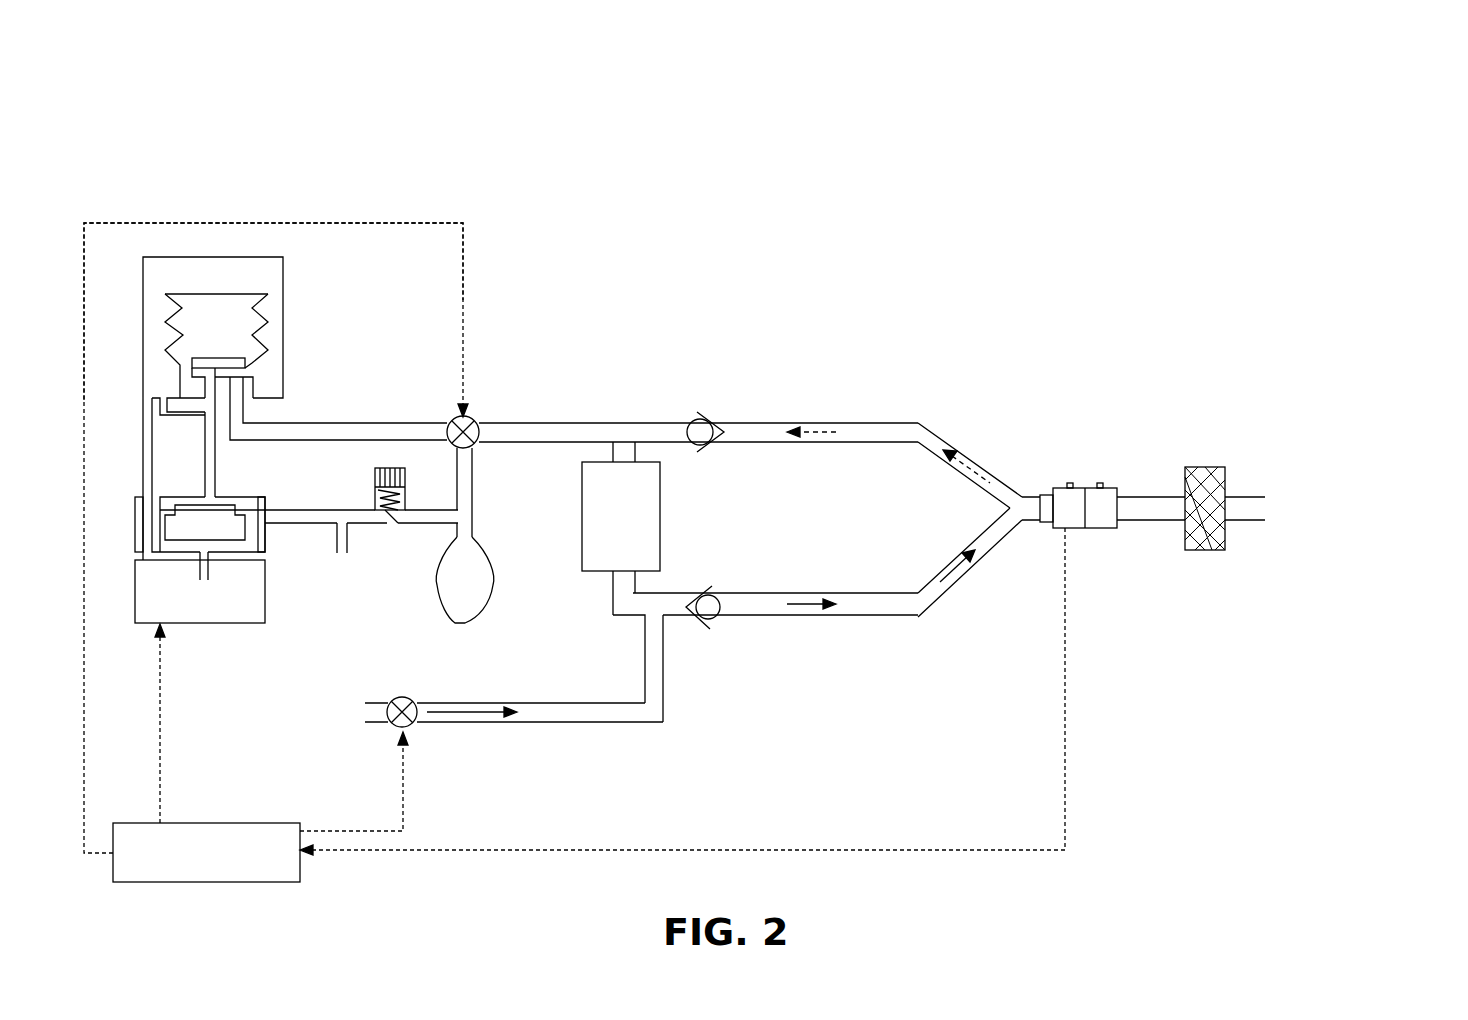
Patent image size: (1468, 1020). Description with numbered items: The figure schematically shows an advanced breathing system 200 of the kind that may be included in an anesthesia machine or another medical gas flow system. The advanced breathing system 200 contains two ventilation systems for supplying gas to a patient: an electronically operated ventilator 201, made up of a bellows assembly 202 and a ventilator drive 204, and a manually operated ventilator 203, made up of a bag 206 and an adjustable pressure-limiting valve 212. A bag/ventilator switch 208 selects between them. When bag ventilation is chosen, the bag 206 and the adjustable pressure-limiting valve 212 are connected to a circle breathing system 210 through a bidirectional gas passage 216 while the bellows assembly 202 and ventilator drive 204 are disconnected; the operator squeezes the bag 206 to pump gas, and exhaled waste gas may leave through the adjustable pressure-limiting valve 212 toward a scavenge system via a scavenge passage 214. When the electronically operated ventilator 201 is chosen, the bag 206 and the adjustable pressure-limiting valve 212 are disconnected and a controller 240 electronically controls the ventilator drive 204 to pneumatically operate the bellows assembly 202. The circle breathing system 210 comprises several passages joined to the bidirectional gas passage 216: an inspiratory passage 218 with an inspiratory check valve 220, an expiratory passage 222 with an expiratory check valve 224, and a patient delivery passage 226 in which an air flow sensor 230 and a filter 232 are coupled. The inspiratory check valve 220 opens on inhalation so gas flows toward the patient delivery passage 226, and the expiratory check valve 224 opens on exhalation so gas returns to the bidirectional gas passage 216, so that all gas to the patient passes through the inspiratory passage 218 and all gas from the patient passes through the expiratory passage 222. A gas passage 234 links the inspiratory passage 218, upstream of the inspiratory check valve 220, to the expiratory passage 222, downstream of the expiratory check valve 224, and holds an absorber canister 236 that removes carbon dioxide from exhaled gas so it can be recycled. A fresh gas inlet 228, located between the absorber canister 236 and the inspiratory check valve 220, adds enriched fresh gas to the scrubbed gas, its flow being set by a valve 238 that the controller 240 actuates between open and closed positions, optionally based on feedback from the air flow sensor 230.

The advanced breathing system 200 is at (1378, 84).
The electronically operated ventilator 201 is at (381, 262).
The bellows assembly 202 is at (284, 275).
The manually operated ventilator 203 is at (500, 477).
The ventilator drive 204 is at (195, 625).
The bag 206 is at (490, 550).
The bag/ventilator switch 208 is at (475, 418).
The circle breathing system 210 is at (1118, 272).
The adjustable pressure-limiting valve 212 is at (375, 480).
The scavenge passage 214 is at (347, 537).
The bidirectional gas passage 216 is at (548, 423).
The inspiratory passage 218 is at (840, 593).
The inspiratory check valve 220 is at (712, 592).
The expiratory passage 222 is at (855, 423).
The expiratory check valve 224 is at (697, 418).
The patient delivery passage 226 is at (1240, 497).
The fresh gas inlet 228 is at (485, 703).
The air flow sensor 230 is at (1078, 530).
The filter 232 is at (1207, 467).
The gas passage 234 is at (612, 600).
The absorber canister 236 is at (660, 500).
The valve 238 is at (402, 697).
The controller 240 is at (255, 823).